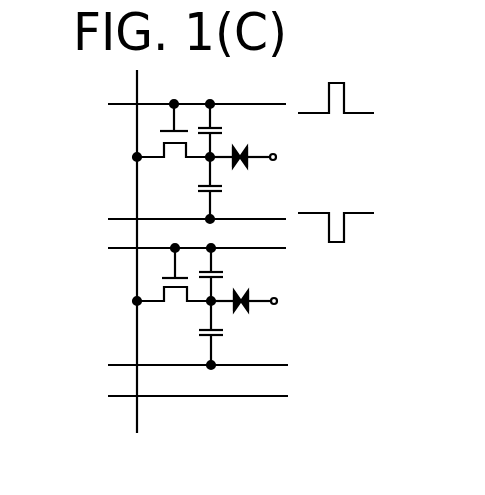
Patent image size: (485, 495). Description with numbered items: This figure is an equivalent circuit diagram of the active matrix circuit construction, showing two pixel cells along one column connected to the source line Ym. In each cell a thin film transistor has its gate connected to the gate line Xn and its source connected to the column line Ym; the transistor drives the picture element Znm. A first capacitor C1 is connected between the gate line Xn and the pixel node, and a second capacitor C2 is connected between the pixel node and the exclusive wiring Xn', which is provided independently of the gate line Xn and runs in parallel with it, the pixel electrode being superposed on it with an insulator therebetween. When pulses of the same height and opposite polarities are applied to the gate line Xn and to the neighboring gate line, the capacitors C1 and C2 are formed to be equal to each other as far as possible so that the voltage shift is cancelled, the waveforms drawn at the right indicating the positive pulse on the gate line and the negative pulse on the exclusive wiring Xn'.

The source line Ym is at (149, 272).
The gate line Xn is at (165, 102).
The exclusive wiring Xn' is at (166, 217).
The capacitor C1 is at (231, 130).
The capacitor C2 is at (188, 188).
The picture element Znm is at (246, 177).